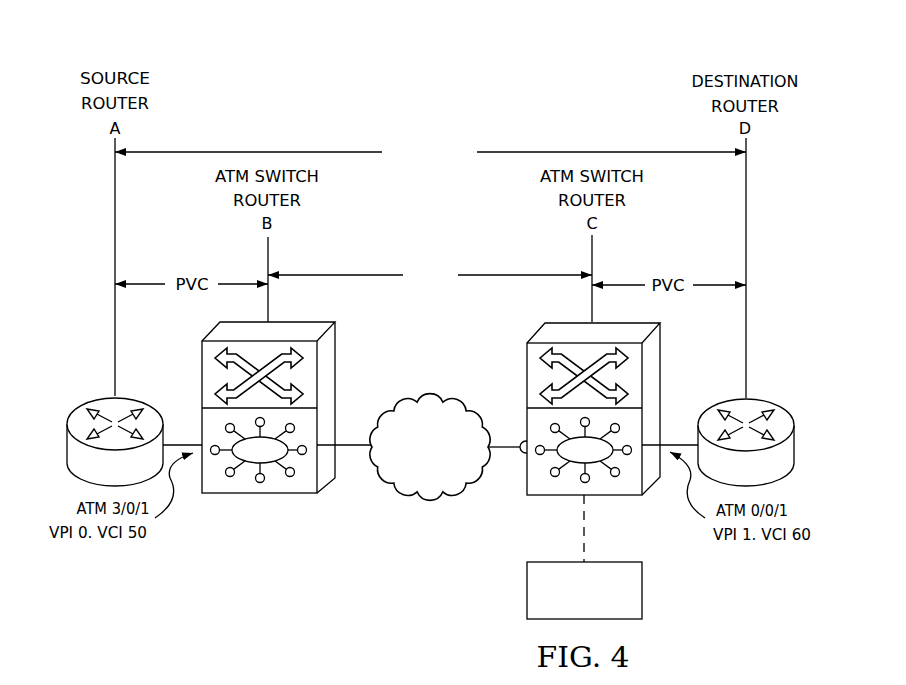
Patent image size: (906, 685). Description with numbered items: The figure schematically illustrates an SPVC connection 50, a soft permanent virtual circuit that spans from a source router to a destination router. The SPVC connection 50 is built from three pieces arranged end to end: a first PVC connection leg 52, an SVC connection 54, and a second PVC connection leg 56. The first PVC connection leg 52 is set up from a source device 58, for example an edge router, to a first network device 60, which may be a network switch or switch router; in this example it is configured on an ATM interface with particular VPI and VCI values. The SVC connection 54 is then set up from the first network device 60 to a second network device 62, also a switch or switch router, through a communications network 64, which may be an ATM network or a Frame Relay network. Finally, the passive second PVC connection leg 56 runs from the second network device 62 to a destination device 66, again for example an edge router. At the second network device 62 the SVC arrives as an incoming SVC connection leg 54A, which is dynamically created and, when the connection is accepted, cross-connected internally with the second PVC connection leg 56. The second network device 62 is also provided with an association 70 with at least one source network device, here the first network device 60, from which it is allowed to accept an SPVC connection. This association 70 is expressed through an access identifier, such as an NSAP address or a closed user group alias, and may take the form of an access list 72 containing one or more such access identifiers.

The SPVC connection 50 is at (583, 65).
The first PVC connection leg 52 is at (195, 442).
The SVC connection 54 is at (432, 266).
The incoming SVC connection leg 54A is at (521, 443).
The second PVC connection leg 56 is at (667, 440).
The source device 58 is at (78, 415).
The first network device 60 is at (258, 497).
The second network device 62 is at (613, 497).
The communications network 64 is at (412, 493).
The destination device 66 is at (783, 418).
The association 70 is at (610, 557).
The access list 72 is at (643, 595).